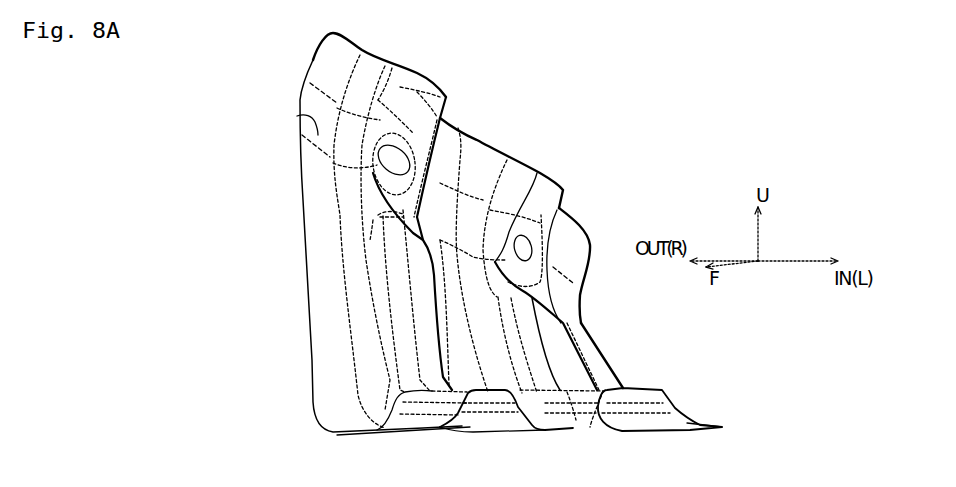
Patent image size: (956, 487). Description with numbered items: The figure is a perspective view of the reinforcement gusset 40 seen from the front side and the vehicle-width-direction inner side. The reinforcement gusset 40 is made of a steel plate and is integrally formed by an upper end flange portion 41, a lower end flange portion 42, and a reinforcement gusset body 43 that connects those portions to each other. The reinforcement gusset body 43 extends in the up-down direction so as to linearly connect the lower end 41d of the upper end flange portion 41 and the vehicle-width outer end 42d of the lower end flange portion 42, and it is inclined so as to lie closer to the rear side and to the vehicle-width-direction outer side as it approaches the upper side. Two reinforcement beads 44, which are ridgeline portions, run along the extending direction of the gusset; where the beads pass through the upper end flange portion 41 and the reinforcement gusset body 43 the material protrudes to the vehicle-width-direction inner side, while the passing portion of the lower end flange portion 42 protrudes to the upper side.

The reinforcement gusset 40 is at (523, 104).
The upper end flange portion 41 is at (352, 40).
The lower end of the upper end flange portion 41d is at (297, 116).
The lower end flange portion 42 is at (703, 420).
The vehicle-width outer end of the lower end flange portion 42d is at (402, 398).
The reinforcement gusset body 43 is at (606, 365).
The reinforcement beads 44 is at (430, 80).